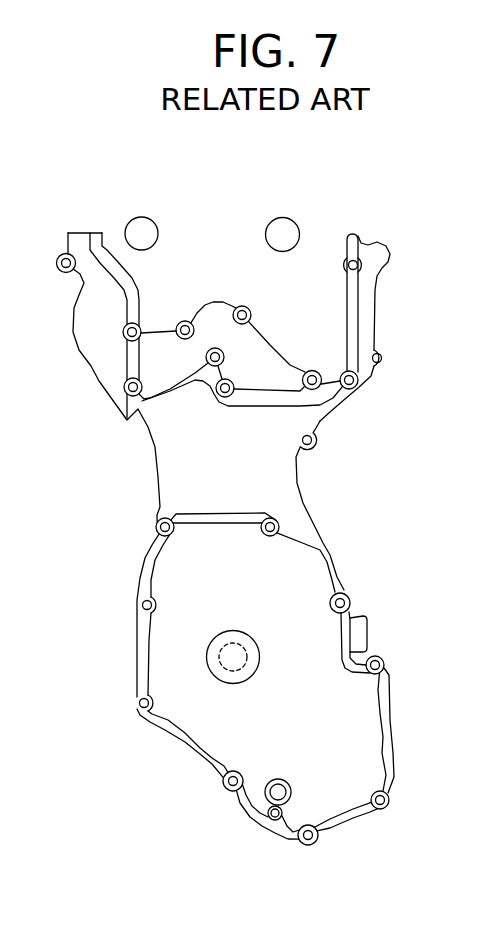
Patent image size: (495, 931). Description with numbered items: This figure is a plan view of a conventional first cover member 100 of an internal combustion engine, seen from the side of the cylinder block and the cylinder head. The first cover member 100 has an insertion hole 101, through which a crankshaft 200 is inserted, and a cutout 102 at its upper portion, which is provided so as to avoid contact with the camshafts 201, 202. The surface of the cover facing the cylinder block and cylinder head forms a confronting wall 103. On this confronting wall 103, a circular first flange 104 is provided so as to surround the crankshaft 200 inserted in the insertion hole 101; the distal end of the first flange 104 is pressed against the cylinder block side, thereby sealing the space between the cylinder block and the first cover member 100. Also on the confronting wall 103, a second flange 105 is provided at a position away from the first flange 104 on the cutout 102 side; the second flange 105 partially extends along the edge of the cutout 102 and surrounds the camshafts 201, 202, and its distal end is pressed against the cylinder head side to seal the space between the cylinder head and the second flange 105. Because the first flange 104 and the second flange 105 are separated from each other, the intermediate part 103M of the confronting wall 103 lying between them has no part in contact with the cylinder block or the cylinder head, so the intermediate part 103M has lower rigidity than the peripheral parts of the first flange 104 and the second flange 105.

The first cover member 100 is at (385, 178).
The insertion hole 101 is at (233, 684).
The cutout 102 is at (112, 243).
The confronting wall 103 is at (162, 570).
The intermediate part 103M is at (177, 448).
The first flange 104 is at (135, 663).
The second flange 105 is at (138, 287).
The crankshaft 200 is at (260, 657).
The camshaft 201 is at (288, 213).
The camshaft 202 is at (147, 214).